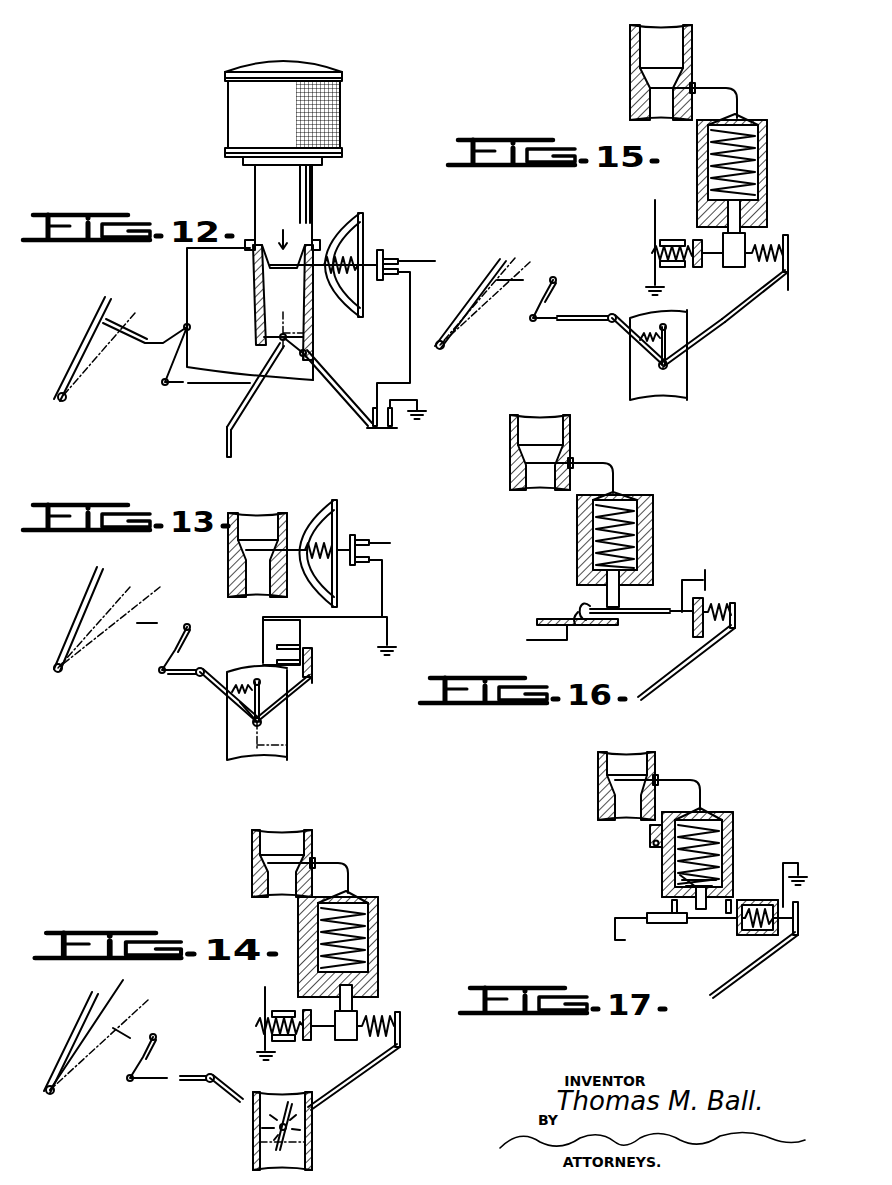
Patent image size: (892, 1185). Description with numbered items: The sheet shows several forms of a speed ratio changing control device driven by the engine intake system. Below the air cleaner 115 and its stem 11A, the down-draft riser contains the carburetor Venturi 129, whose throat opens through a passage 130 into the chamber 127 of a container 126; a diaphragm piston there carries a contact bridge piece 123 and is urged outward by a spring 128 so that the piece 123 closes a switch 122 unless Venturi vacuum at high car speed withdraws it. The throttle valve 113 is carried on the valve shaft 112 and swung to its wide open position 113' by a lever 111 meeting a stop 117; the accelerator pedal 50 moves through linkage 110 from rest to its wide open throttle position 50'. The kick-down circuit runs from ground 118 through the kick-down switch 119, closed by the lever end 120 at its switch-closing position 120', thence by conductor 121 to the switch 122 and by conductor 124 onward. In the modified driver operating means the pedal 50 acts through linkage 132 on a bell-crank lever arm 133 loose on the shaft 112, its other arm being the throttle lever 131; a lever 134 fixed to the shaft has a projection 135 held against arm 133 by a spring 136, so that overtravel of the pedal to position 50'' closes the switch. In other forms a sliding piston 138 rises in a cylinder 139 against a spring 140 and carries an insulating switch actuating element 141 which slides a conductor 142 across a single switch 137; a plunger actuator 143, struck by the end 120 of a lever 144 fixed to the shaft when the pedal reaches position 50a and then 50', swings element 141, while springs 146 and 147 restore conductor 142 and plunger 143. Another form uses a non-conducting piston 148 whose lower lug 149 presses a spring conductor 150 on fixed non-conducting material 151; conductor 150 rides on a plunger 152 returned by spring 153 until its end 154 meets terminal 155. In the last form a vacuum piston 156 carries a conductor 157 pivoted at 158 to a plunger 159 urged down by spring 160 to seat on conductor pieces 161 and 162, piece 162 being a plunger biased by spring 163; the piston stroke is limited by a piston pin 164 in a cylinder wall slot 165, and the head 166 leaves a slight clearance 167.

In FIG. 12, the air cleaner 115 is at (342, 68).
In FIG. 12, the stem 11A is at (305, 188).
In FIG. 12, the carburetor Venturi 129 is at (258, 262).
In FIG. 15, the carburetor Venturi 129 is at (630, 90).
In FIG. 13, the carburetor Venturi 129 is at (228, 550).
In FIG. 16, the carburetor Venturi 129 is at (510, 468).
In FIG. 14, the carburetor Venturi 129 is at (252, 866).
In FIG. 17, the carburetor Venturi 129 is at (630, 772).
In FIG. 12, the passage 130 is at (290, 268).
In FIG. 15, the passage 130 is at (726, 88).
In FIG. 13, the passage 130 is at (275, 545).
In FIG. 16, the passage 130 is at (603, 462).
In FIG. 14, the passage 130 is at (340, 863).
In FIG. 17, the passage 130 is at (672, 780).
In FIG. 12, the container 126 is at (340, 240).
In FIG. 13, the container 126 is at (316, 515).
In FIG. 12, the spring 128 is at (364, 218).
In FIG. 13, the spring 128 is at (338, 520).
In FIG. 12, the chamber 127 is at (348, 278).
In FIG. 12, the switch 122 is at (383, 255).
In FIG. 13, the switch 122 is at (358, 543).
In FIG. 12, the contact bridge piece 123 is at (392, 245).
In FIG. 13, the contact bridge piece 123 is at (362, 540).
In FIG. 12, the conductor 124 is at (415, 260).
In FIG. 15, the conductor 124 is at (655, 222).
In FIG. 13, the conductor 124 is at (390, 543).
In FIG. 16, the conductor 124 is at (538, 642).
In FIG. 14, the conductor 124 is at (265, 1000).
In FIG. 17, the conductor 124 is at (620, 942).
In FIG. 12, the conductor 121 is at (410, 310).
In FIG. 13, the conductor 121 is at (392, 568).
In FIG. 12, the valve shaft 112 is at (262, 322).
In FIG. 15, the valve shaft 112 is at (660, 366).
In FIG. 13, the valve shaft 112 is at (255, 726).
In FIG. 14, the valve shaft 112 is at (305, 1120).
In FIG. 12, the throttle valve 113 is at (314, 337).
In FIG. 14, the throttle valve 113 is at (251, 1126).
In FIG. 12, the wide open throttle position 113' is at (317, 331).
In FIG. 13, the wide open throttle position 113' is at (297, 737).
In FIG. 14, the wide open throttle position 113' is at (310, 1150).
In FIG. 12, the stop 117 is at (307, 353).
In FIG. 15, the stop 117 is at (660, 354).
In FIG. 13, the stop 117 is at (256, 676).
In FIG. 12, the kick-down switch 119 is at (372, 408).
In FIG. 13, the kick-down switch 119 is at (286, 645).
In FIG. 12, the lever end 120 is at (201, 442).
In FIG. 15, the lever end 120 is at (794, 233).
In FIG. 13, the lever end 120 is at (333, 663).
In FIG. 16, the lever end 120 is at (714, 651).
In FIG. 14, the lever end 120 is at (423, 1040).
In FIG. 17, the lever end 120 is at (793, 939).
In FIG. 12, the switch-closing position 120' is at (405, 428).
In FIG. 13, the switch-closing position 120' is at (319, 649).
In FIG. 12, the ground 118 is at (424, 416).
In FIG. 15, the ground 118 is at (662, 287).
In FIG. 16, the ground 118 is at (708, 578).
In FIG. 14, the ground 118 is at (272, 1062).
In FIG. 17, the ground 118 is at (788, 880).
In FIG. 12, the lever 111 is at (233, 409).
In FIG. 12, the linkage 110 is at (163, 376).
In FIG. 12, the accelerator pedal 50 is at (80, 349).
In FIG. 15, the accelerator pedal 50 is at (479, 281).
In FIG. 13, the accelerator pedal 50 is at (105, 615).
In FIG. 14, the accelerator pedal 50 is at (70, 1043).
In FIG. 12, the wide open throttle pedal position 50' is at (119, 345).
In FIG. 15, the wide open throttle pedal position 50' is at (488, 274).
In FIG. 13, the wide open throttle pedal position 50' is at (112, 613).
In FIG. 14, the wide open throttle pedal position 50' is at (115, 1040).
In FIG. 15, the overtravel pedal position 50'' is at (505, 295).
In FIG. 13, the overtravel pedal position 50'' is at (131, 622).
In FIG. 14, the pedal position 50a is at (118, 1003).
In FIG. 15, the spring 140 is at (755, 118).
In FIG. 16, the spring 140 is at (648, 508).
In FIG. 14, the spring 140 is at (378, 900).
In FIG. 17, the spring 140 is at (722, 810).
In FIG. 15, the cylinder 139 is at (767, 135).
In FIG. 14, the cylinder 139 is at (383, 915).
In FIG. 15, the sliding piston 138 is at (708, 150).
In FIG. 14, the sliding piston 138 is at (383, 970).
In FIG. 15, the switch 137 is at (675, 238).
In FIG. 14, the switch 137 is at (285, 1008).
In FIG. 15, the spring 146 is at (655, 262).
In FIG. 14, the spring 146 is at (265, 1036).
In FIG. 15, the switch actuating element 141 is at (745, 252).
In FIG. 14, the switch actuating element 141 is at (358, 1022).
In FIG. 15, the conductor 142 is at (700, 270).
In FIG. 14, the conductor 142 is at (312, 1040).
In FIG. 15, the plunger actuator 143 is at (755, 262).
In FIG. 14, the plunger actuator 143 is at (380, 1022).
In FIG. 15, the spring 147 is at (786, 235).
In FIG. 15, the throttle lever 131 is at (745, 308).
In FIG. 13, the throttle lever 131 is at (288, 705).
In FIG. 15, the lever 134 is at (695, 338).
In FIG. 13, the lever 134 is at (292, 690).
In FIG. 15, the spring 136 is at (642, 325).
In FIG. 13, the spring 136 is at (232, 680).
In FIG. 15, the linkage 132 is at (530, 312).
In FIG. 13, the linkage 132 is at (157, 650).
In FIG. 14, the linkage 132 is at (133, 1082).
In FIG. 15, the bell-crank lever arm 133 is at (628, 334).
In FIG. 13, the bell-crank lever arm 133 is at (210, 688).
In FIG. 13, the projection 135 is at (240, 704).
In FIG. 16, the piston 148 is at (653, 550).
In FIG. 14, the piston 148 is at (240, 1104).
In FIG. 16, the lower lug 149 is at (620, 594).
In FIG. 16, the spring conductor 150 is at (638, 614).
In FIG. 16, the fixed non-conducting material 151 is at (600, 626).
In FIG. 16, the plunger 152 is at (708, 605).
In FIG. 16, the spring 153 is at (716, 605).
In FIG. 16, the conductor end 154 is at (580, 608).
In FIG. 16, the terminal 155 is at (575, 613).
In FIG. 14, the lever 144 is at (360, 1082).
In FIG. 17, the vacuum operated piston 156 is at (727, 870).
In FIG. 17, the conductor 157 is at (673, 903).
In FIG. 17, the pivot 158 is at (730, 900).
In FIG. 17, the plunger 159 is at (680, 875).
In FIG. 17, the spring 160 is at (715, 885).
In FIG. 17, the conductor piece 161 is at (663, 924).
In FIG. 17, the conductor piece 162 is at (724, 936).
In FIG. 17, the spring 163 is at (760, 962).
In FIG. 17, the piston pin 164 is at (653, 843).
In FIG. 17, the cylinder wall slot 165 is at (650, 828).
In FIG. 17, the head 166 is at (722, 835).
In FIG. 17, the clearance 167 is at (722, 860).